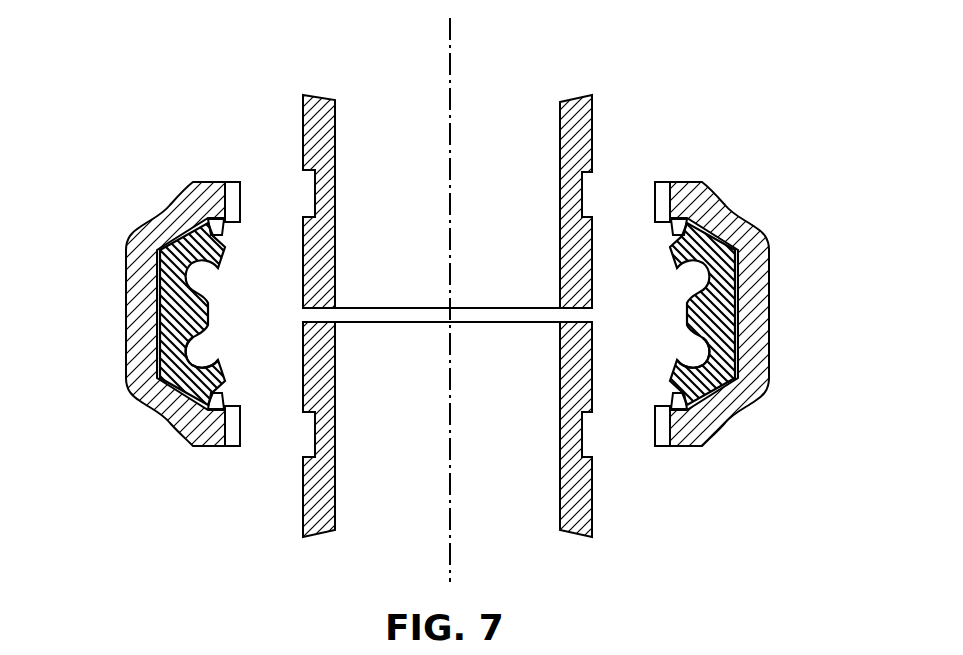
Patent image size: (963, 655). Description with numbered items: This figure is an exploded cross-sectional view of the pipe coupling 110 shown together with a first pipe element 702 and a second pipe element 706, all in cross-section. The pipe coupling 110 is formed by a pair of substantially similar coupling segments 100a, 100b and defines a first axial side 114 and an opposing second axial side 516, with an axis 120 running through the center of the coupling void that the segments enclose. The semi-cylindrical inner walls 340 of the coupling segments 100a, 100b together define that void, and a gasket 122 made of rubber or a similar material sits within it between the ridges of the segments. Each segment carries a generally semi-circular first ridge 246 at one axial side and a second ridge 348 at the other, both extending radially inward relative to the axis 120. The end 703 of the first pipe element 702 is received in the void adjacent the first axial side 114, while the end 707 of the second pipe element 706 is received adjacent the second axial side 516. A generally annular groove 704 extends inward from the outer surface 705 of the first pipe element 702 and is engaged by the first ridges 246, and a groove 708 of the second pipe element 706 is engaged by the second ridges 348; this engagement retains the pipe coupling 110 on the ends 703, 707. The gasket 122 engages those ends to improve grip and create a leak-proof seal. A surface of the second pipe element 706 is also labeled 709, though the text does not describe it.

The coupling segment 100a is at (132, 357).
The coupling segment 100b is at (770, 342).
The pipe coupling 110 is at (838, 244).
The first axial side 114 is at (678, 450).
The axis 120 is at (452, 93).
The gasket 122 is at (225, 282).
The first ridge 246 is at (228, 448).
The inner wall 340 is at (210, 328).
The second ridge 348 is at (227, 189).
The second axial side 516 is at (690, 183).
The first pipe element 702 is at (287, 510).
The end of the first pipe element 703 is at (592, 372).
The groove 704 is at (298, 430).
The outer surface 705 is at (593, 511).
The second pipe element 706 is at (288, 106).
The end of the second pipe element 707 is at (594, 247).
The groove 708 is at (298, 188).
The upper housing wall 709 is at (594, 135).